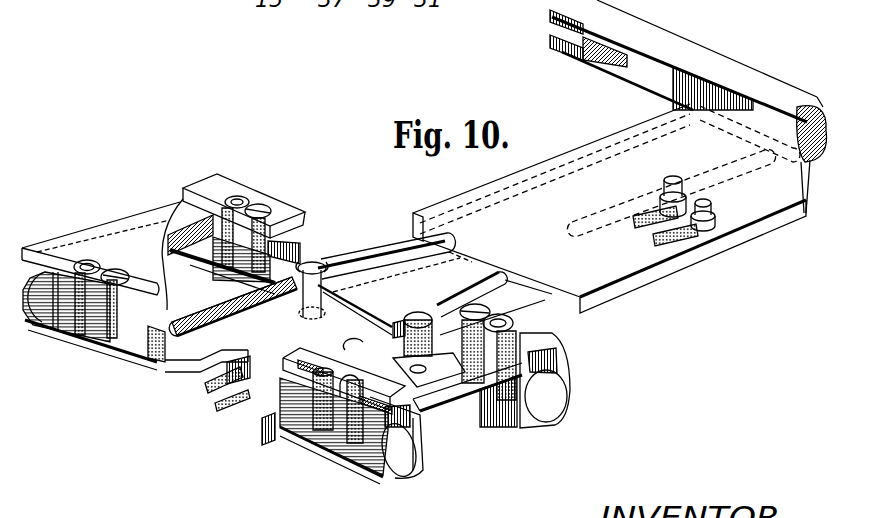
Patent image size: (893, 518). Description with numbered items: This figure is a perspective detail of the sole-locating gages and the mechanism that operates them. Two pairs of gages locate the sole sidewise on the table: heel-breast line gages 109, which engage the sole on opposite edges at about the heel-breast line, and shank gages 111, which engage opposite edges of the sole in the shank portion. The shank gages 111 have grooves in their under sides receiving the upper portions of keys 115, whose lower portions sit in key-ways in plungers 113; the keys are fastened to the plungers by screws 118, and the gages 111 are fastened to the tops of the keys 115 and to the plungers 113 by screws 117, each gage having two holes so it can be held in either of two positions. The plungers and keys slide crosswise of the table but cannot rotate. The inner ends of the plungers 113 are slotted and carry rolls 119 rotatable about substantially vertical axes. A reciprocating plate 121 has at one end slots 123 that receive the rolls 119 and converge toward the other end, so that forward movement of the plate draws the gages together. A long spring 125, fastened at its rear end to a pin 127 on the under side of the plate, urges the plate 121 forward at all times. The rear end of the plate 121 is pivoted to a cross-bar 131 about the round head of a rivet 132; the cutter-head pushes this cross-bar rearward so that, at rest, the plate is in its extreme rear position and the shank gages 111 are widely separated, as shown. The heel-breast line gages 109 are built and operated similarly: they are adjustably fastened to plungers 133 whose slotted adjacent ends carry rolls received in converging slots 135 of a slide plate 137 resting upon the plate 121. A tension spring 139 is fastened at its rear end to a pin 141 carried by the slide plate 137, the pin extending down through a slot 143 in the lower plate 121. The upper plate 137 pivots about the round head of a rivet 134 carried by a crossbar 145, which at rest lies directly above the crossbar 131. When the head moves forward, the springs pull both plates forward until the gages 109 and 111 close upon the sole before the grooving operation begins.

The heel-breast line gages 109 is at (217, 180).
The shank gages 111 is at (78, 250).
The plungers 113 is at (37, 283).
The keys 115 is at (63, 287).
The screws 117 is at (113, 272).
The screws 118 is at (88, 347).
The rolls 119 is at (157, 365).
The reciprocating plate 121 is at (636, 283).
The slots 123 is at (222, 335).
The long spring 125 is at (670, 240).
The pin 127 is at (703, 225).
The cross-bar 131 is at (668, 95).
The rivet 132 is at (806, 197).
The plungers 133 is at (289, 264).
The rivet 134 is at (821, 108).
The converging slots 135 is at (367, 267).
The slide plate 137 is at (551, 188).
The tension spring 139 is at (642, 232).
The pin 141 is at (685, 174).
The slot 143 is at (592, 214).
The crossbar 145 is at (666, 40).